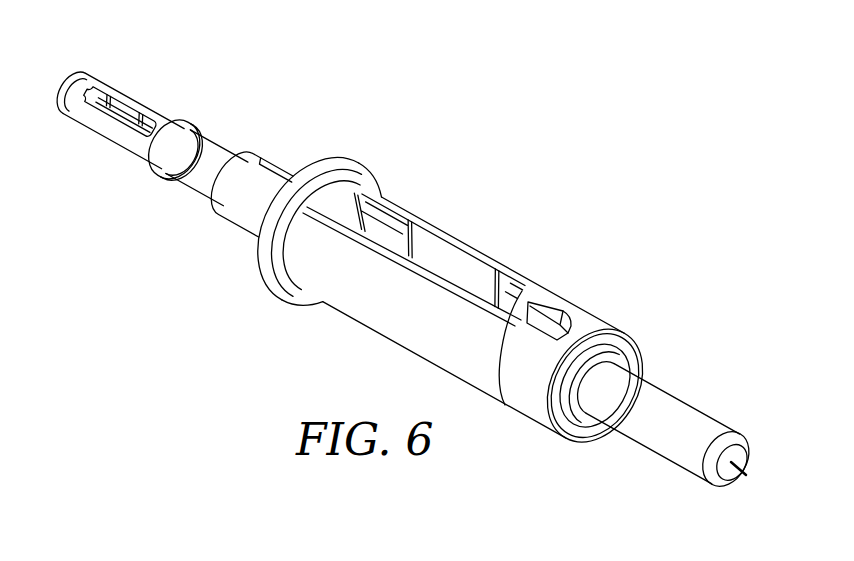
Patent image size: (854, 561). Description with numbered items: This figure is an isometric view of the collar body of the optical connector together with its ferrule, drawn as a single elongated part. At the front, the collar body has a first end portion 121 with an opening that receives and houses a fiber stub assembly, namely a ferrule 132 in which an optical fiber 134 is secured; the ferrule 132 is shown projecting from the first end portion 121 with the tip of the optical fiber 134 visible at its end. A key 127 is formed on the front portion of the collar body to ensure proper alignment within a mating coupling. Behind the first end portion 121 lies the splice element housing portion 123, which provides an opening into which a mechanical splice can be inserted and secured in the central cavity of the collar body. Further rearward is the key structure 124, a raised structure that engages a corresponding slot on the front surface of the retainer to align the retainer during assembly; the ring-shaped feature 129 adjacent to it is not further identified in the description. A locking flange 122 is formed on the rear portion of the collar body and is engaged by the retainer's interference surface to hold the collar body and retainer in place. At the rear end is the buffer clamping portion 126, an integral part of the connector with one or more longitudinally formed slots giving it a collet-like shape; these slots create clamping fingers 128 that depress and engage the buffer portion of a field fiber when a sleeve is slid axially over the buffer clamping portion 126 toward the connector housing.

The first end portion 121 is at (634, 350).
The locking flange 122 is at (187, 120).
The splice element housing portion 123 is at (440, 253).
The key structure 124 is at (280, 163).
The buffer clamping portion 126 is at (95, 73).
The key 127 is at (558, 313).
The clamping fingers 128 is at (118, 125).
The flange ring 129 is at (330, 160).
The ferrule 132 is at (680, 407).
The optical fiber 134 is at (733, 478).